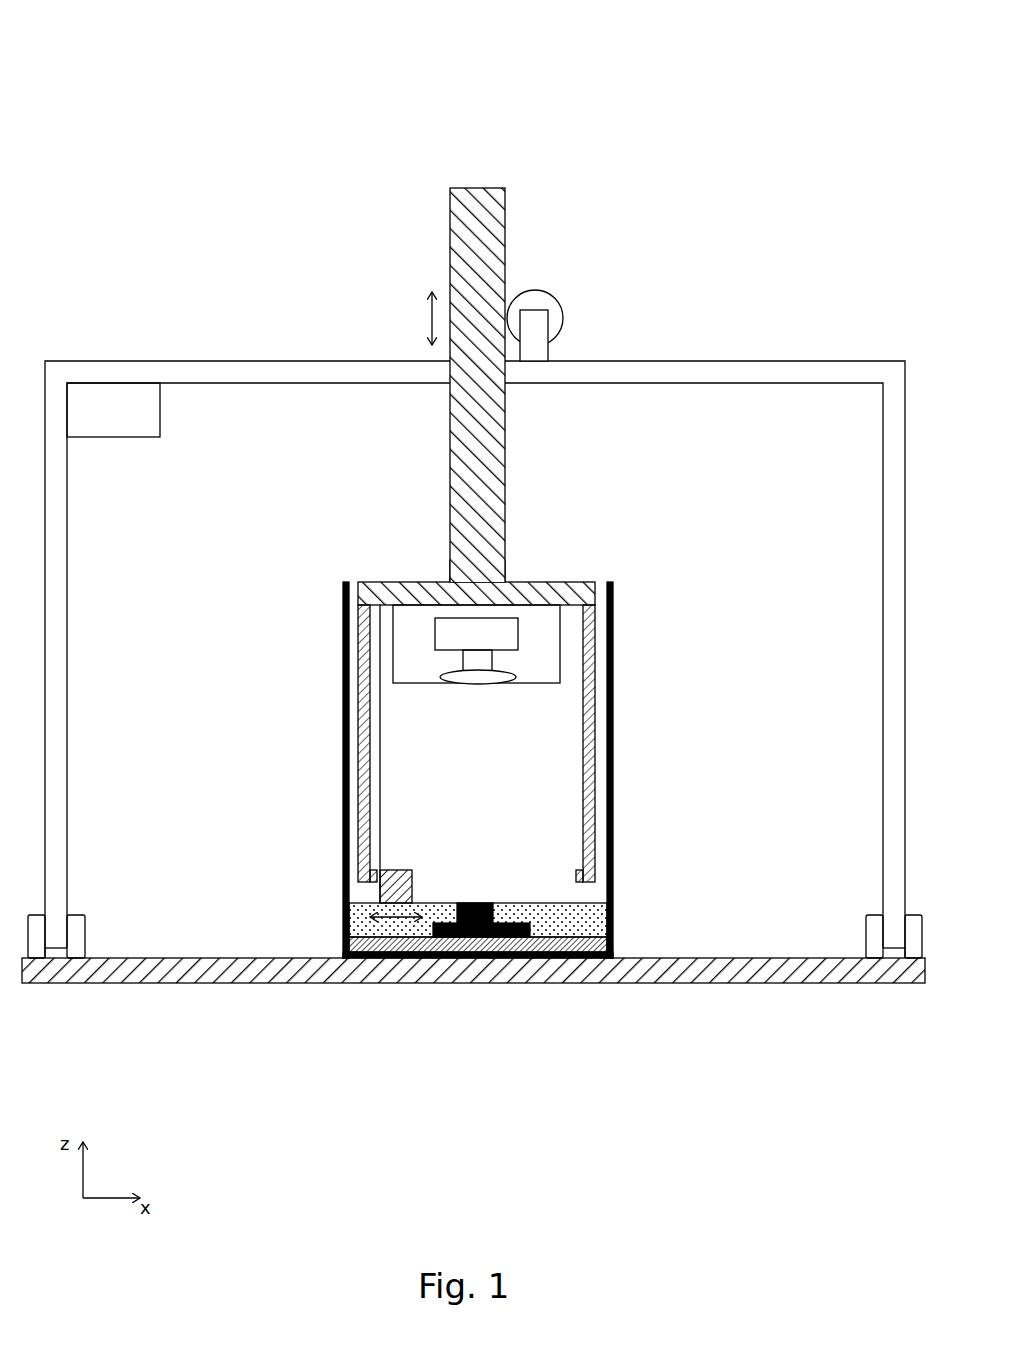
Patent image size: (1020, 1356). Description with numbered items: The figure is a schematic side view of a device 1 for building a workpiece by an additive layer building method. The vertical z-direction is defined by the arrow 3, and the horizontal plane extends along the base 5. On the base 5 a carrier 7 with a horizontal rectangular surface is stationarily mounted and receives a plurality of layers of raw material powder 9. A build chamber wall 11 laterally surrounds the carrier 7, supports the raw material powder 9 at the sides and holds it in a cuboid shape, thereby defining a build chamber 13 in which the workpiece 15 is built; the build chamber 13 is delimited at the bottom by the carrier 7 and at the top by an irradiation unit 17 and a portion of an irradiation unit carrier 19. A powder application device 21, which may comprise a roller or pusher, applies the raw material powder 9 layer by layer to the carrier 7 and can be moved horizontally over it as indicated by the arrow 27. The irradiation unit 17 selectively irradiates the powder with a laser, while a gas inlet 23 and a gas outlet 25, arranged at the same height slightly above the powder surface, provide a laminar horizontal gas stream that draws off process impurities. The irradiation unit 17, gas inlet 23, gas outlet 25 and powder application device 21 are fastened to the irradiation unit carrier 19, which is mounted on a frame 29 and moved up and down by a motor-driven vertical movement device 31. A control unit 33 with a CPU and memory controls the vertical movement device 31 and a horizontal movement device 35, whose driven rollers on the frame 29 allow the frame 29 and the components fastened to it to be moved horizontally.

The device 1 is at (170, 72).
The arrow 3 is at (430, 320).
The base 5 is at (186, 985).
The carrier 7 is at (355, 950).
The raw material powder 9 is at (573, 922).
The build chamber wall 11 is at (343, 680).
The build chamber 13 is at (476, 731).
The workpiece 15 is at (480, 905).
The irradiation unit 17 is at (476, 644).
The irradiation unit carrier 19 is at (507, 550).
The powder application device 21 is at (403, 870).
The gas inlet 23 is at (587, 872).
The gas outlet 25 is at (360, 868).
The arrow 27 is at (398, 920).
The frame 29 is at (705, 360).
The vertical movement device 31 is at (536, 268).
The control unit 33 is at (113, 410).
The horizontal movement device 35 is at (85, 915).